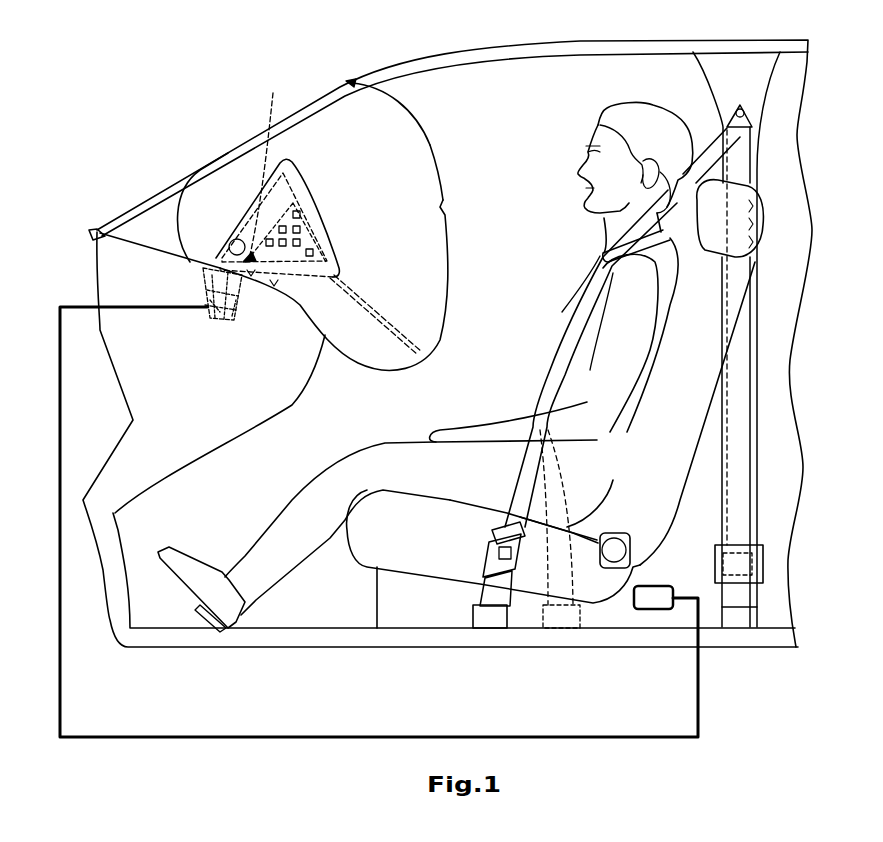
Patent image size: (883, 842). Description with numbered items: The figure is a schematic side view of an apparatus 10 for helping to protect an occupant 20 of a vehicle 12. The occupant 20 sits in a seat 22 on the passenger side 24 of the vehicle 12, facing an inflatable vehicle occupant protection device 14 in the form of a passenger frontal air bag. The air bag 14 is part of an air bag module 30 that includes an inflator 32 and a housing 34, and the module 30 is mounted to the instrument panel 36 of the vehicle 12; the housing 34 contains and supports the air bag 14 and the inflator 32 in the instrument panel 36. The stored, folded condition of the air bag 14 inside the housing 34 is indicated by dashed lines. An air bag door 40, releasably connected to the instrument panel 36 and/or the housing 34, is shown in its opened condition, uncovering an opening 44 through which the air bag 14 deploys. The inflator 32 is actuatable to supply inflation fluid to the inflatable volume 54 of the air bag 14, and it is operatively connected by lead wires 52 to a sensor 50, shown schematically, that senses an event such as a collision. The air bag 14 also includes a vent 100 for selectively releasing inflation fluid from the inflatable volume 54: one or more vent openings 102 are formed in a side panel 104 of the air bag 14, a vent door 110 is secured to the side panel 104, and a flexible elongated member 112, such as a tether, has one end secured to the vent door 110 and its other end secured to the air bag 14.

The apparatus 10 is at (133, 178).
The vehicle 12 is at (139, 122).
The inflatable vehicle occupant protection device 14 is at (427, 253).
The occupant 20 is at (633, 133).
The seat 22 is at (690, 340).
The passenger side 24 is at (482, 126).
The air bag module 30 is at (196, 281).
The inflator 32 is at (220, 312).
The housing 34 is at (232, 316).
The instrument panel 36 is at (268, 398).
The air bag door 40 is at (171, 255).
The opening 44 is at (259, 165).
The sensor 50 is at (653, 600).
The lead wires 52 is at (174, 737).
The inflatable volume 54 is at (381, 171).
The vent 100 is at (325, 167).
The vent openings 102 is at (300, 232).
The side panel 104 is at (370, 117).
The vent door 110 is at (303, 241).
The flexible elongated member 112 is at (374, 318).